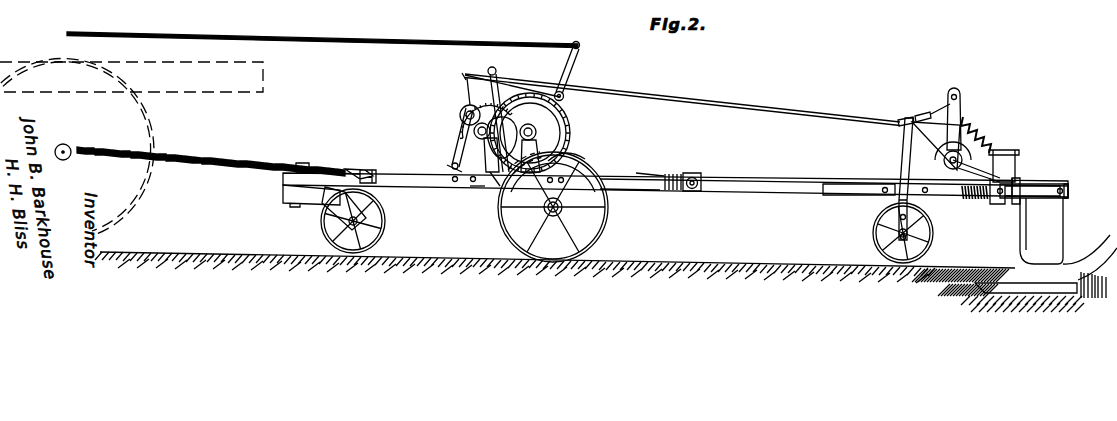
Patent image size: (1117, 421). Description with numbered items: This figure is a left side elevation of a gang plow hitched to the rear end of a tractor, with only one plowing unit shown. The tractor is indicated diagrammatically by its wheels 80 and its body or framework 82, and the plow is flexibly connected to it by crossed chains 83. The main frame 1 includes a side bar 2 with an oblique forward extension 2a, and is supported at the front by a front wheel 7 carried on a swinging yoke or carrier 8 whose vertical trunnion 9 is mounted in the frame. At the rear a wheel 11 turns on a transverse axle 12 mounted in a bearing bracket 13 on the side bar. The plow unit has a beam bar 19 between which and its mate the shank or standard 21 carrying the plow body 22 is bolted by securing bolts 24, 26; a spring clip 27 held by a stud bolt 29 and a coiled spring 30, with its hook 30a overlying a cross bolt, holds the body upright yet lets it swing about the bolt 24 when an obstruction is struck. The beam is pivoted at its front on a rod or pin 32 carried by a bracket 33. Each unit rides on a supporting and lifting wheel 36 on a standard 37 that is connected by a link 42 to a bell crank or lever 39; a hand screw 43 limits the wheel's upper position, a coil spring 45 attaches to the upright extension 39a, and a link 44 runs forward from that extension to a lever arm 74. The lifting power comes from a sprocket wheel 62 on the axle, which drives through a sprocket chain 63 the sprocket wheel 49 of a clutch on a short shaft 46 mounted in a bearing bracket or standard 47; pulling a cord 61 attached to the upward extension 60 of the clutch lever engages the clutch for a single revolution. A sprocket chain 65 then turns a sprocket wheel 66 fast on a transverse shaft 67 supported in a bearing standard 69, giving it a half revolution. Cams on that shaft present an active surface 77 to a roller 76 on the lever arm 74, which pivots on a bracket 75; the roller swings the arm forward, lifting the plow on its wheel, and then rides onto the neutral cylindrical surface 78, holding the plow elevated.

The cord 61 is at (450, 40).
The upward extension 60 is at (582, 61).
The body or framework 82 is at (268, 80).
The wheels 80 is at (151, 207).
The crossed chains 83 is at (240, 162).
The vertical trunnion 9 is at (308, 162).
The main frame 1 is at (400, 160).
The oblique forward extension 2a is at (342, 171).
The side bar 2 is at (625, 187).
The bearing bracket 13 is at (641, 174).
The beam bar 19 is at (783, 190).
The bracket 33 is at (683, 192).
The rod or pin 32 is at (696, 191).
The swinging yoke or carrier 8 is at (320, 203).
The front wheel 7 is at (390, 229).
The wheel 11 is at (597, 236).
The sprocket wheel 62 is at (553, 207).
The transverse axle 12 is at (565, 209).
The supporting and lifting wheel 36 is at (885, 223).
The standard 37 is at (898, 141).
The link 42 is at (898, 129).
The link or rod 44 is at (826, 115).
The upright extension 39a is at (962, 110).
The bell crank or lever 39 is at (940, 150).
The coil spring 45 is at (985, 141).
The hand screw 43 is at (1015, 158).
The hook 30a is at (1018, 178).
The securing bolt 26 is at (1018, 187).
The securing bolt 24 is at (1073, 180).
The stud bolt 29 is at (972, 202).
The coiled spring 30 is at (986, 206).
The spring clip 27 is at (1004, 207).
The shank or standard 21 is at (1062, 229).
The plow body 22 is at (1077, 248).
The lever arm 74 is at (460, 106).
The roller 76 is at (460, 111).
The sprocket wheel 66 is at (466, 133).
The transverse shaft 67 is at (488, 130).
The sprocket chain 65 is at (505, 103).
The active surface 77 is at (500, 99).
The short shaft 46 is at (566, 121).
The sprocket wheel 49 is at (547, 136).
The sprocket chain 63 is at (573, 153).
The bearing bracket or standard 47 is at (570, 187).
The bracket 75 is at (445, 183).
The bearing standard 69 is at (470, 190).
The neutral circular or cylindrical surface 78 is at (498, 192).